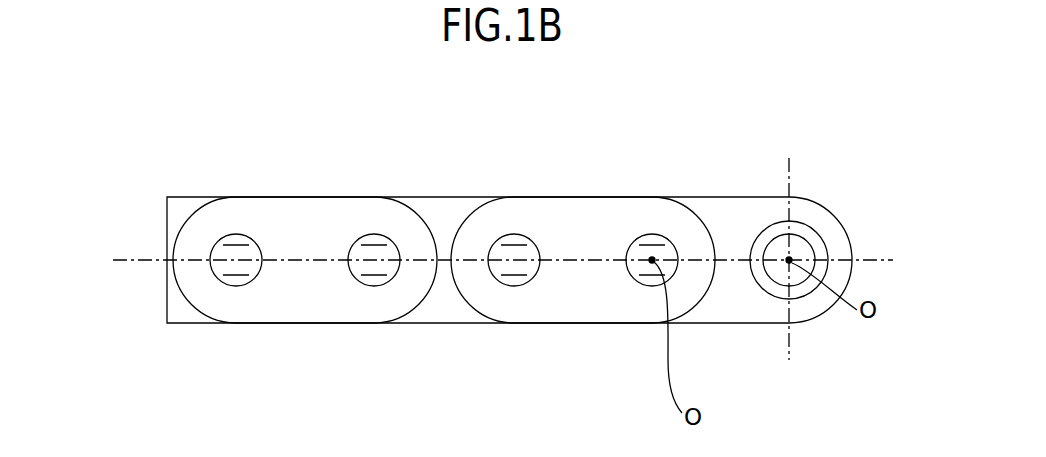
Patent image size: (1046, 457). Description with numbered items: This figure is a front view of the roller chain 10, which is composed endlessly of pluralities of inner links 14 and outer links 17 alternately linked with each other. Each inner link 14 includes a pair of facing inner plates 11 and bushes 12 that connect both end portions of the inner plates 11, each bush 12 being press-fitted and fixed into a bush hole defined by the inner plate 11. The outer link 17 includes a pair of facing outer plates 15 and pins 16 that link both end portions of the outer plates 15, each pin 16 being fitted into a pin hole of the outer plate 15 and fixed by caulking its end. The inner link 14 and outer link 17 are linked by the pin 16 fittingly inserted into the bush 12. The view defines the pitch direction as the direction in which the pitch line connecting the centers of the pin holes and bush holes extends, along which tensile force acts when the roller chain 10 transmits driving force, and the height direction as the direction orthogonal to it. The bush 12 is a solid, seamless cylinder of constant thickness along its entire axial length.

The roller chain 10 is at (742, 158).
The inner plate 11 is at (723, 313).
The bush 12 is at (807, 237).
The inner link 14 is at (438, 195).
The outer plate 15 is at (555, 307).
The pin 16 is at (632, 278).
The outer link 17 is at (585, 195).